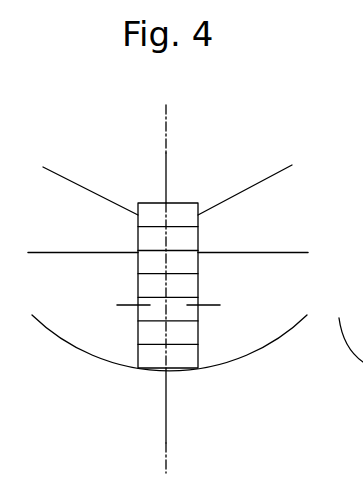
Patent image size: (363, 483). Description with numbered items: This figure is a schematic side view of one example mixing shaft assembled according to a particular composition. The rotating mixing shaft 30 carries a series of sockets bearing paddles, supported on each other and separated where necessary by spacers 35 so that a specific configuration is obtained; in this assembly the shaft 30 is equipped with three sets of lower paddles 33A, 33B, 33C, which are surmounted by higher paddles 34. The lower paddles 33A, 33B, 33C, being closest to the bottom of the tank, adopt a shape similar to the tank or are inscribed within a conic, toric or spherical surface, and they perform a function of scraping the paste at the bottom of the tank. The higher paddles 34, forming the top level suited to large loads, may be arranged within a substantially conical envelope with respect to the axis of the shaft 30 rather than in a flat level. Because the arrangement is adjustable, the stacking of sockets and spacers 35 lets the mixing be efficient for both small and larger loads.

The mixing shaft 30 is at (168, 426).
The lower paddles 33A is at (250, 362).
The lower paddles 33B is at (208, 304).
The lower paddles 33C is at (272, 252).
The higher paddles 34 is at (244, 190).
The spacers 35 is at (198, 262).